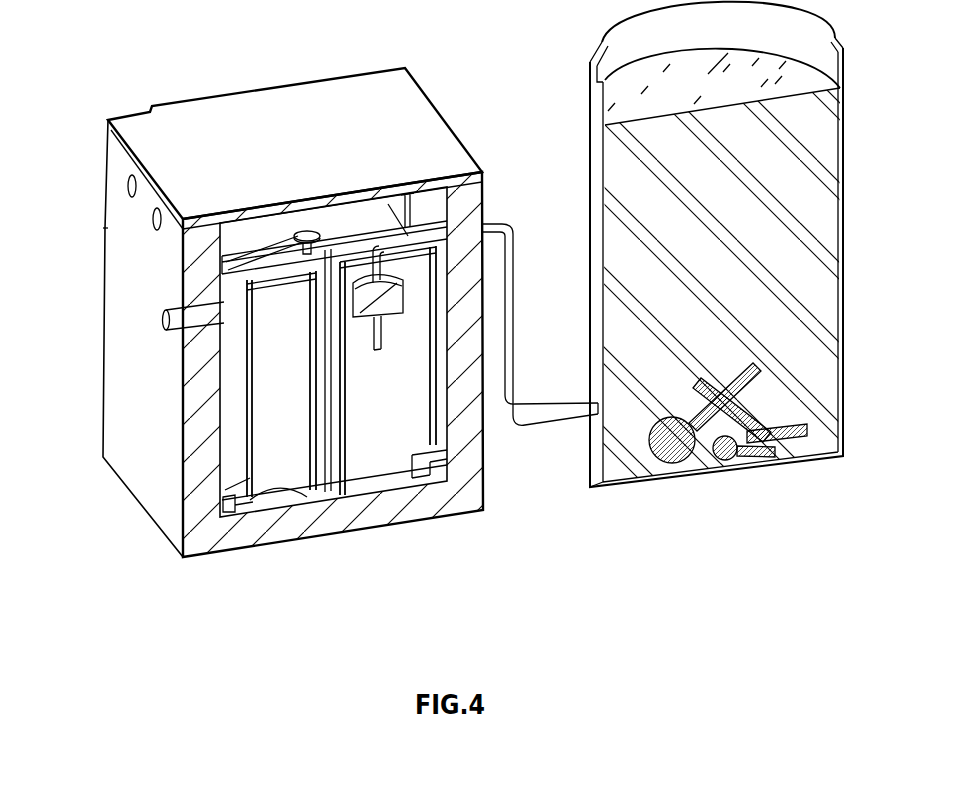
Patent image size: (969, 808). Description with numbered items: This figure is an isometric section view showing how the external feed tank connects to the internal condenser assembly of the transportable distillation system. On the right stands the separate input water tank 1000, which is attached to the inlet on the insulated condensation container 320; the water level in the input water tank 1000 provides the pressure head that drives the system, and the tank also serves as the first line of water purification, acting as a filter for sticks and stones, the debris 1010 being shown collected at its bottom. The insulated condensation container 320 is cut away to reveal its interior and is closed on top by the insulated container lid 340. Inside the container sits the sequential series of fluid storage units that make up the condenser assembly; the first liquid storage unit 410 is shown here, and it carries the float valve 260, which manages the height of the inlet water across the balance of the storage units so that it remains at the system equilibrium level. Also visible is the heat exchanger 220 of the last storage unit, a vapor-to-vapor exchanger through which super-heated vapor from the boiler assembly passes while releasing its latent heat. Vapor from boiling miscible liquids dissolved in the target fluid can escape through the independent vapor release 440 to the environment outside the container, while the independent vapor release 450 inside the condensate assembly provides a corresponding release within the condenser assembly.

The heat exchanger 220 is at (292, 470).
The float valve 260 is at (395, 292).
The insulated condensation container 320 is at (467, 495).
The insulated container lid 340 is at (326, 104).
The first liquid storage unit 410 is at (363, 278).
The independent vapor release to environment 440 is at (127, 187).
The independent vapor release inside condensate assembly 450 is at (307, 233).
The input water tank 1000 is at (618, 46).
The debris 1010 is at (672, 453).